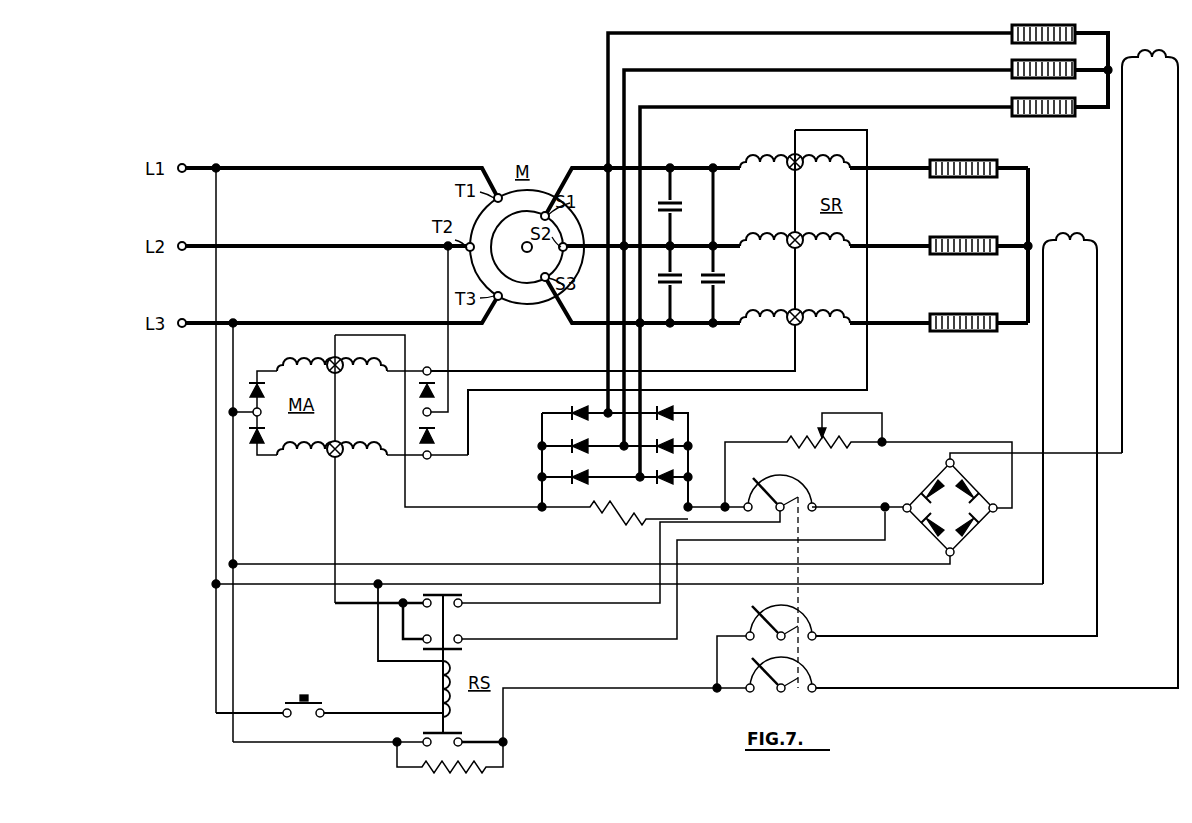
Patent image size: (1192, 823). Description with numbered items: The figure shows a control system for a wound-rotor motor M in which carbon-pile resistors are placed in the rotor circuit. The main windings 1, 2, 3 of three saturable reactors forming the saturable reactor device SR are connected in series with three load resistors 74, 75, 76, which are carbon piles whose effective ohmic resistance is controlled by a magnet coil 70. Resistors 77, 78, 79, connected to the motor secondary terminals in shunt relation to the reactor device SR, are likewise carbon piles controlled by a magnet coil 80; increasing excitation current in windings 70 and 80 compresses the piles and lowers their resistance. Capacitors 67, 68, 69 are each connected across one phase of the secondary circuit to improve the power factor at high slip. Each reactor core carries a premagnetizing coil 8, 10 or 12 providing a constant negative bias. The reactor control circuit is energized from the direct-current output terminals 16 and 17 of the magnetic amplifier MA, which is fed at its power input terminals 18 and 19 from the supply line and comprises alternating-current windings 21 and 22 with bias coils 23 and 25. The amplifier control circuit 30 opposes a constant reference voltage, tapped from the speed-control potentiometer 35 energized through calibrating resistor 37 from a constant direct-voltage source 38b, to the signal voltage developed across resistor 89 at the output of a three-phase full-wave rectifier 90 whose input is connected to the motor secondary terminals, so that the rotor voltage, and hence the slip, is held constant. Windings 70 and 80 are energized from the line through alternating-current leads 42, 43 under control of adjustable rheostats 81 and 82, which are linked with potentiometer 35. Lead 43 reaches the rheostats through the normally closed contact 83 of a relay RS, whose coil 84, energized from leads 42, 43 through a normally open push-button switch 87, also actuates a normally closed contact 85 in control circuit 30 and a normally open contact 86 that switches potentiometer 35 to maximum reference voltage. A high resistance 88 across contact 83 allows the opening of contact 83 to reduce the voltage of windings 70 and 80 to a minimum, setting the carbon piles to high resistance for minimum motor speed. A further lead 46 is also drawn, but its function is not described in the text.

The main winding 1 is at (772, 154).
The main winding 2 is at (772, 232).
The main winding 3 is at (772, 309).
The premagnetizing coil 8 is at (797, 192).
The premagnetizing coil 10 is at (796, 266).
The premagnetizing coil 12 is at (796, 343).
The direct-current output terminal 16 is at (423, 366).
The direct-current output terminal 17 is at (429, 460).
The power input terminal 18 is at (260, 420).
The power input terminal 19 is at (430, 416).
The alternating-current winding 21 is at (314, 358).
The alternating-current winding 22 is at (296, 461).
The premagnetizing coil 23 is at (338, 391).
The premagnetizing coil 25 is at (343, 472).
The amplifier control circuit 30 is at (488, 508).
The potentiometer rheostat 35 is at (804, 483).
The calibrating resistor 37 is at (813, 430).
The source of constant direct voltage 38b is at (950, 507).
The alternating-current lead 42 is at (214, 503).
The alternating-current lead 43 is at (264, 564).
The conductor 46 is at (1090, 456).
The capacitor 67 is at (682, 206).
The capacitor 68 is at (726, 279).
The capacitor 69 is at (676, 286).
The magnet coil 70 is at (1084, 237).
The load resistor 74 is at (974, 158).
The load resistor 75 is at (974, 236).
The load resistor 76 is at (974, 313).
The resistor 77 is at (1012, 41).
The resistor 78 is at (1012, 76).
The resistor 79 is at (1012, 113).
The magnet coil 80 is at (1156, 68).
The adjustable rheostat 81 is at (804, 614).
The adjustable rheostat 82 is at (804, 667).
The normally closed contact 83 is at (460, 733).
The control coil 84 is at (435, 684).
The normally closed contact 85 is at (454, 605).
The normally open contact 86 is at (466, 647).
The push-button switch 87 is at (300, 698).
The resistor 88 is at (468, 769).
The resistor 89 is at (630, 514).
The three-phase full-wave rectifier 90 is at (614, 458).